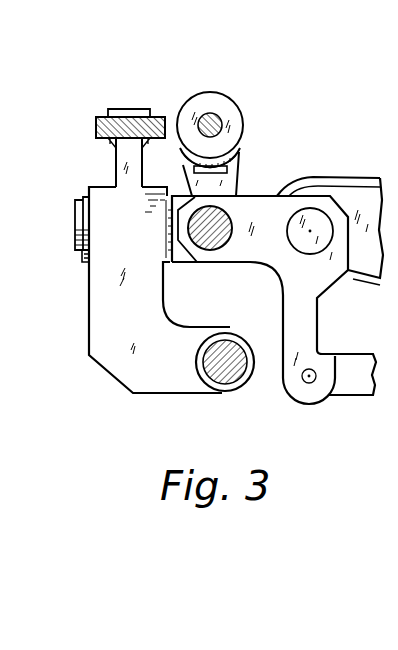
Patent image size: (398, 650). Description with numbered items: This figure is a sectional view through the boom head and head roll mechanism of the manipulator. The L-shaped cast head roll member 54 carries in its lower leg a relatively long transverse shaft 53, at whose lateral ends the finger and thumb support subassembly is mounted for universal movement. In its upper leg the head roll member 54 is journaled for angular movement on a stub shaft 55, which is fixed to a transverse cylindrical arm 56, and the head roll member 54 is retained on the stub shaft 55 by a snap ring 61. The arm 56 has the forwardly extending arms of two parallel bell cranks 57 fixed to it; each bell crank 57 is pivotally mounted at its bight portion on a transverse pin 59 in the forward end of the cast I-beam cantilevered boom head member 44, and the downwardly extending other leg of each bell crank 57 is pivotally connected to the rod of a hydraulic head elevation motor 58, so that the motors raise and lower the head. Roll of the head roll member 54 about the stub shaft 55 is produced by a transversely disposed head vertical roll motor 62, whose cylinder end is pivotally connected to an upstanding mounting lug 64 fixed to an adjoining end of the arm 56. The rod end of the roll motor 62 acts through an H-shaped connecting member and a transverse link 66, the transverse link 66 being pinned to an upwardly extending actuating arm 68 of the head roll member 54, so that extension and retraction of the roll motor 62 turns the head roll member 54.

The boom head member 44 is at (376, 257).
The transverse shaft 53 is at (229, 335).
The head roll member 54 is at (139, 326).
The stub shaft 55 is at (80, 222).
The transverse cylindrical arm 56 is at (213, 249).
The bell crank 57 is at (306, 324).
The hydraulic head elevation motor 58 is at (355, 392).
The transverse pin 59 is at (297, 234).
The snap ring 61 is at (83, 257).
The head vertical roll motor 62 is at (237, 118).
The mounting lug 64 is at (232, 180).
The transverse link 66 is at (96, 124).
The actuating arm 68 is at (120, 155).